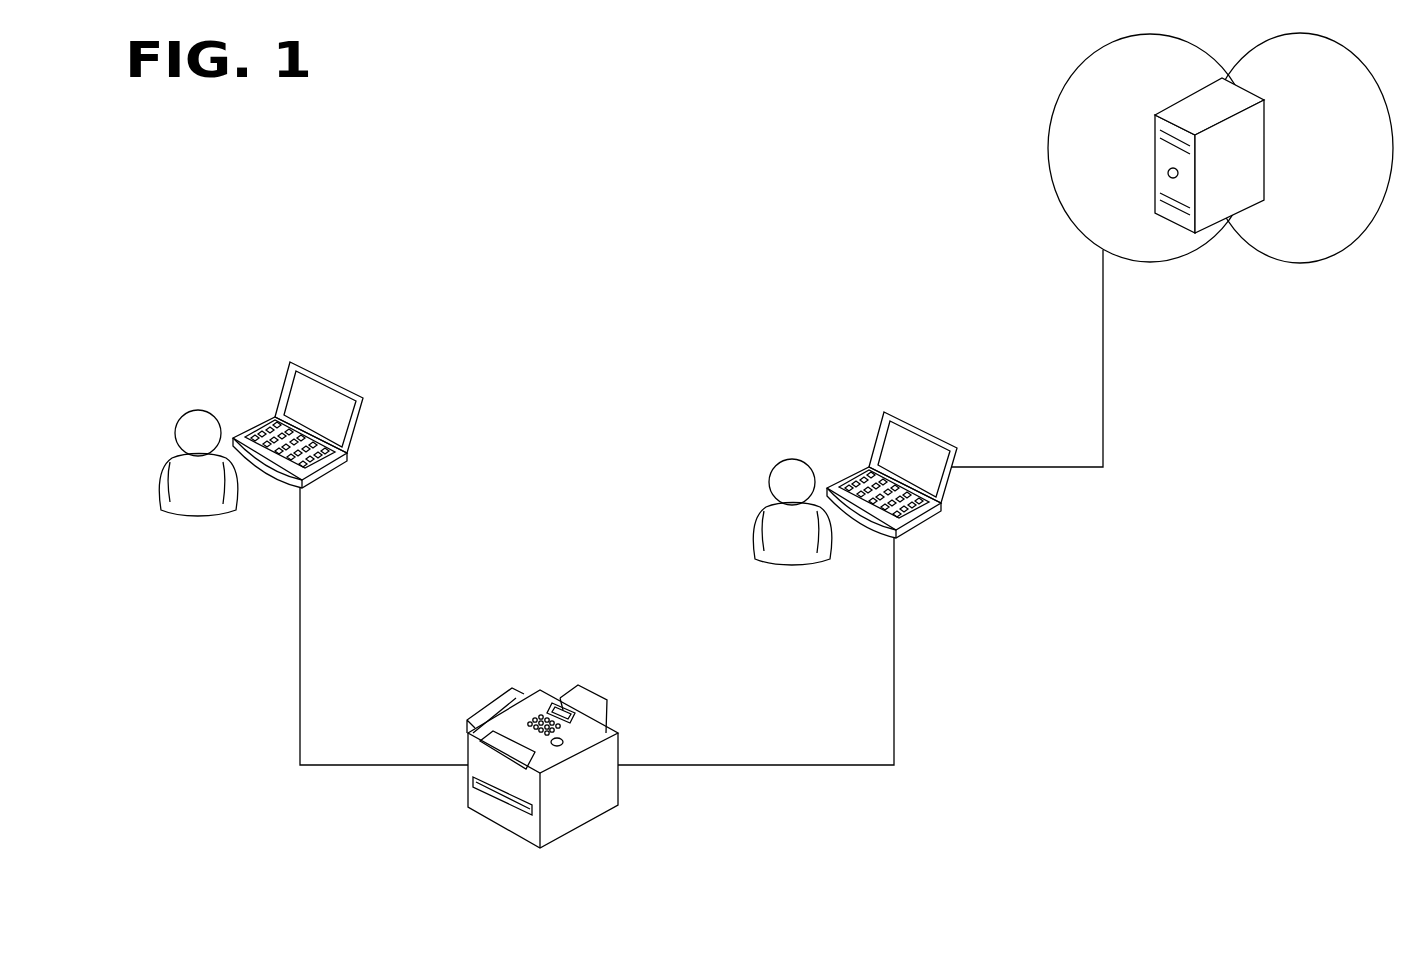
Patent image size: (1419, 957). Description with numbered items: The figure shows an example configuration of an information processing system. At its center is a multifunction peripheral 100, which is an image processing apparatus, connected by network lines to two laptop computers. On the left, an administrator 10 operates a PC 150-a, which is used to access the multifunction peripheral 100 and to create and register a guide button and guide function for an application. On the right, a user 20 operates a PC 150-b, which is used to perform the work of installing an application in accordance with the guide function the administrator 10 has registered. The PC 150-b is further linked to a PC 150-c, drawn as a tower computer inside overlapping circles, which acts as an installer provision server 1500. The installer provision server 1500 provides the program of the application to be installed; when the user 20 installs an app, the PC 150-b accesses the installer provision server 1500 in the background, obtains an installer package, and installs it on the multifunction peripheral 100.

The administrator 10 is at (196, 410).
The user 20 is at (790, 460).
The multifunction peripheral 100 is at (572, 827).
The PC 150-a is at (333, 381).
The PC 150-b is at (927, 431).
The PC 150-c is at (1048, 152).
The installer provision server 1500 is at (1265, 127).